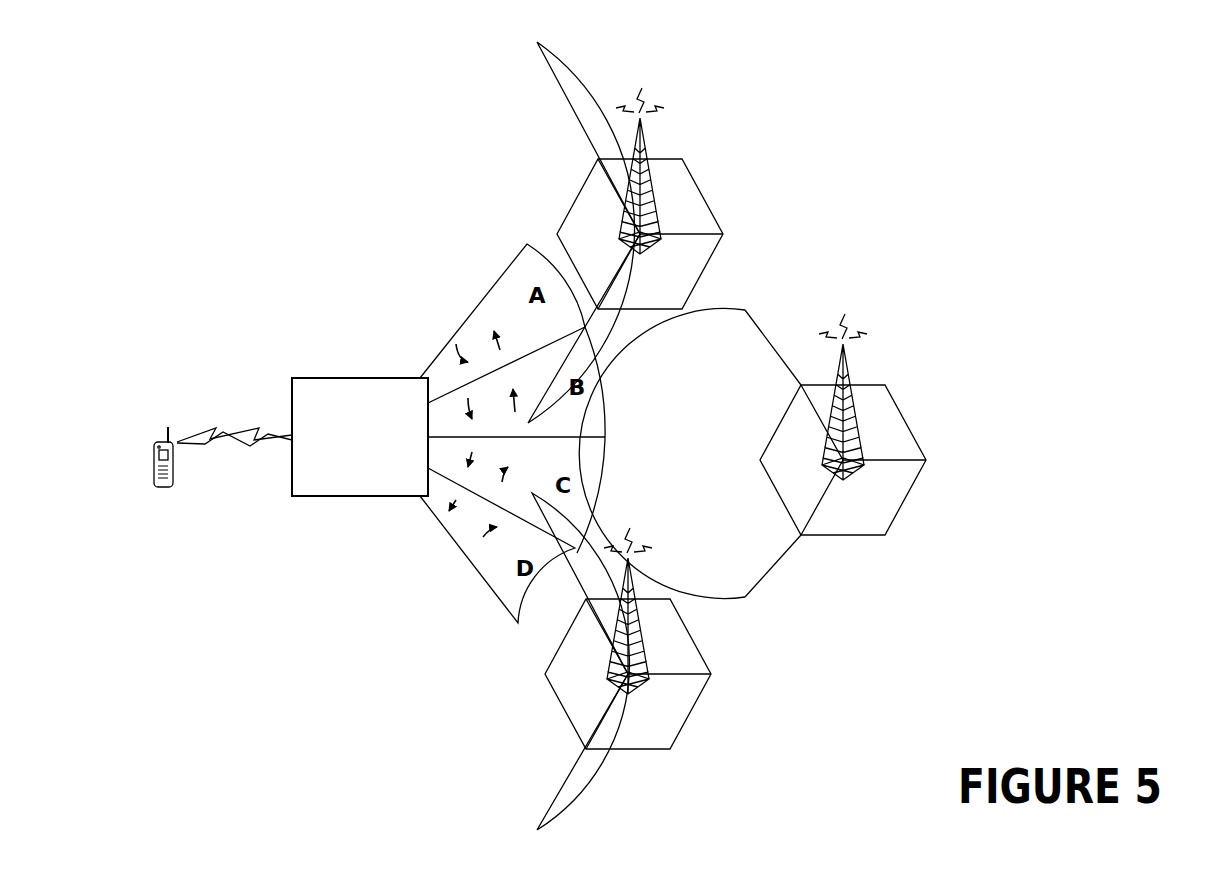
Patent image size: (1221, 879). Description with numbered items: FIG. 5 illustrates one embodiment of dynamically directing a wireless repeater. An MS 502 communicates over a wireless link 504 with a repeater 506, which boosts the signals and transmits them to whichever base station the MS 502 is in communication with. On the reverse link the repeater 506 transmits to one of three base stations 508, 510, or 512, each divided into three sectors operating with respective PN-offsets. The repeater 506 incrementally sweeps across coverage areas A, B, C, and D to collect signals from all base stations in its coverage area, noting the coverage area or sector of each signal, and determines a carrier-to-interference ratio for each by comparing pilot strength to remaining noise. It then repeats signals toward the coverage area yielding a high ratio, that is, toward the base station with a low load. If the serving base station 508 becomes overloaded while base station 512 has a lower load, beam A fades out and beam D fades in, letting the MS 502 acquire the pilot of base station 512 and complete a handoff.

The MS 502 is at (157, 487).
The wireless link 504 is at (214, 430).
The repeater 506 is at (342, 462).
The base station 508 is at (715, 129).
The base station 510 is at (954, 382).
The base station 512 is at (734, 676).